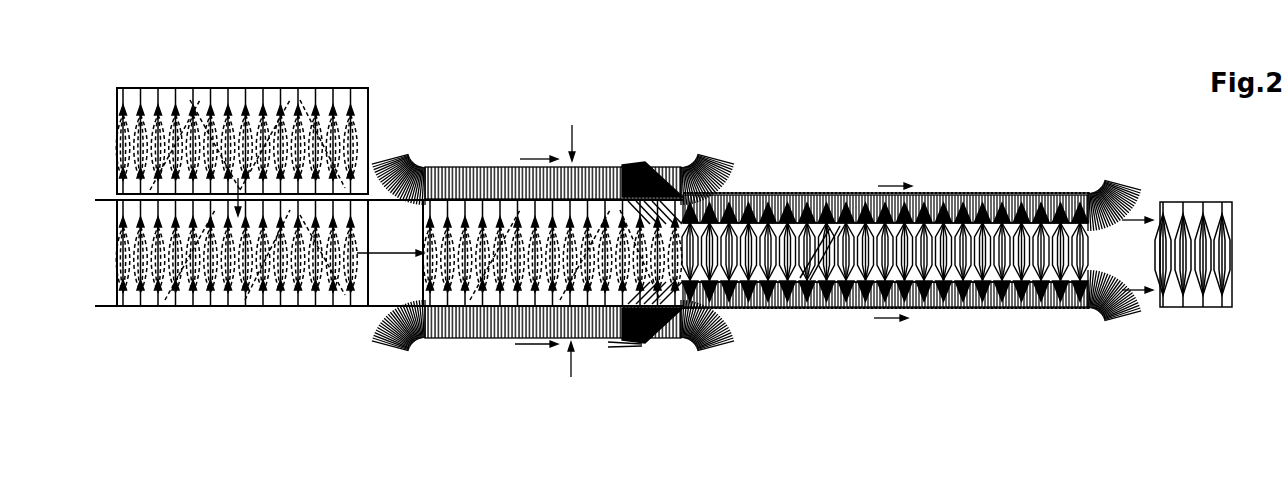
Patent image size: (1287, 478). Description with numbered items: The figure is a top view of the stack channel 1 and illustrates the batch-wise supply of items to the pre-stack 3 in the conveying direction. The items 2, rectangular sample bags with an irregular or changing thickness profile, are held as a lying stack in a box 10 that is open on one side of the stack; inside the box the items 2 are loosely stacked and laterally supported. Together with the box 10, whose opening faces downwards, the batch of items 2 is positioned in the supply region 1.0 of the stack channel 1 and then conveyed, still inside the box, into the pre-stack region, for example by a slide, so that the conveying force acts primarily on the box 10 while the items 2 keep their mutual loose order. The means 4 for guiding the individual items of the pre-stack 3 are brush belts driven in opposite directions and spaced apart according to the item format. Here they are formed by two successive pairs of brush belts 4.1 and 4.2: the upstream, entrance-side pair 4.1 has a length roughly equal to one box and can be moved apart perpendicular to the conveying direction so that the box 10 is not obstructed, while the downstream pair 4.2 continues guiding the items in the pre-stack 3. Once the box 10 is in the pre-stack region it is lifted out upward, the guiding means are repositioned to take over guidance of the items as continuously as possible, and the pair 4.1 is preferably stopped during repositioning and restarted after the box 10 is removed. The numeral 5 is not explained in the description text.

The stack channel 1 is at (100, 307).
The supply region 1.0 is at (190, 322).
The items 2 is at (200, 118).
The pre-stack 3 is at (797, 233).
The brush belts 4 is at (782, 184).
The upstream pair of brush belts 4.1 is at (480, 167).
The downstream pair of brush belts 4.2 is at (968, 195).
The finished product (sheet) 5 is at (1204, 186).
The box 10 is at (371, 108).